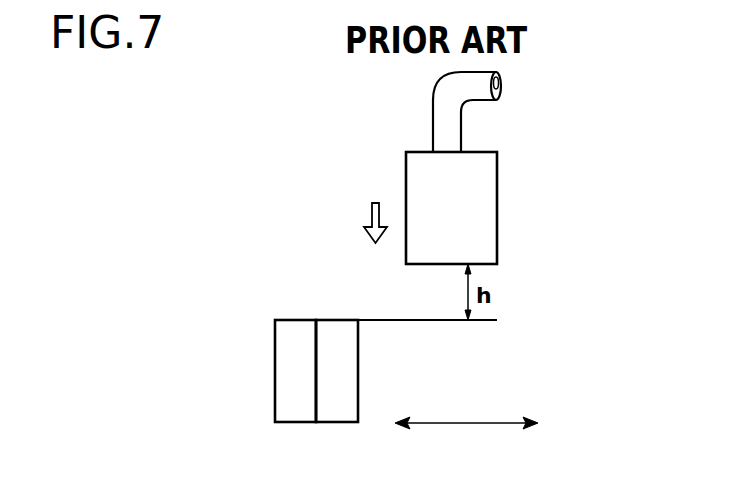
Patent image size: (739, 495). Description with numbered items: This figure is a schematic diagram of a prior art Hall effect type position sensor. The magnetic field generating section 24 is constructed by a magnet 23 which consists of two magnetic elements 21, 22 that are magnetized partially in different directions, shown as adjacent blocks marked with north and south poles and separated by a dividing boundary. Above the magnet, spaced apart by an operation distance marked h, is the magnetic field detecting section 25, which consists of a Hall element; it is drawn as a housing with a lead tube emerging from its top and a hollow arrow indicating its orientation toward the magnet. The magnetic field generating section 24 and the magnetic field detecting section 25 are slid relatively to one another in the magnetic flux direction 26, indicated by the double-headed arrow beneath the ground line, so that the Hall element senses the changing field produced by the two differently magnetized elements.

The magnetic element 21 is at (282, 342).
The magnetic element 22 is at (359, 340).
The magnet 23 is at (316, 422).
The magnetic field generating section 24 is at (247, 388).
The magnetic field detecting section 25 is at (499, 190).
The magnetic flux direction 26 is at (472, 424).